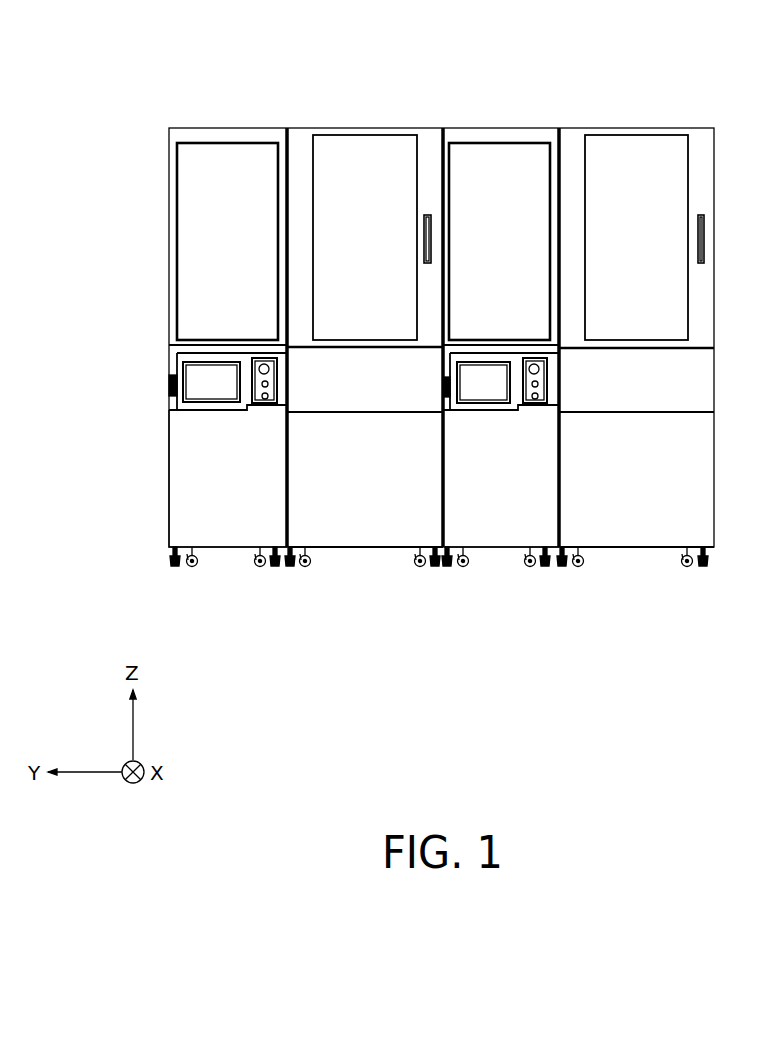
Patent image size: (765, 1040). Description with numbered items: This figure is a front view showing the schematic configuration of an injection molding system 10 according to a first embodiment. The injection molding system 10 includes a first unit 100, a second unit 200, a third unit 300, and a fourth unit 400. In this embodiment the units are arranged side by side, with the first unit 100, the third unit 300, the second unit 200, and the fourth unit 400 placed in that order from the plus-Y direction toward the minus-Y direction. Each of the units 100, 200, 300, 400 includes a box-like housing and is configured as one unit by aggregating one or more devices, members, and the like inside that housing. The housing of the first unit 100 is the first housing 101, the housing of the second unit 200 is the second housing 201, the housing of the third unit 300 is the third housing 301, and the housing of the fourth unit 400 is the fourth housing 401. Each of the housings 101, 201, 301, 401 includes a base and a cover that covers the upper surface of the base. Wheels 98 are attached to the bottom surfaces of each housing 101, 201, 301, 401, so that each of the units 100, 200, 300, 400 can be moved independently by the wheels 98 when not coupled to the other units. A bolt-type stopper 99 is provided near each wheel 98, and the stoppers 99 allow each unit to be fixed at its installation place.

The injection molding system 10 is at (132, 78).
The first unit 100 is at (212, 116).
The second unit 200 is at (499, 116).
The third unit 300 is at (352, 116).
The fourth unit 400 is at (634, 116).
The first housing 101 is at (232, 548).
The second housing 201 is at (503, 548).
The third housing 301 is at (362, 548).
The fourth housing 401 is at (630, 548).
The wheels 98 is at (193, 567).
The bolt-type stopper 99 is at (176, 567).